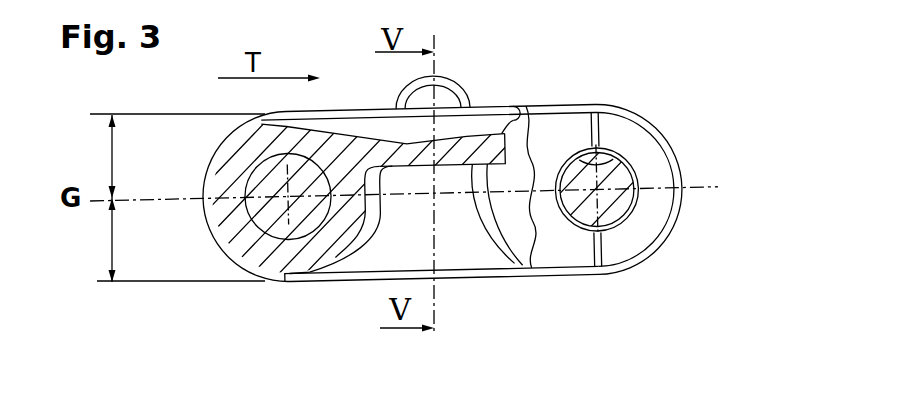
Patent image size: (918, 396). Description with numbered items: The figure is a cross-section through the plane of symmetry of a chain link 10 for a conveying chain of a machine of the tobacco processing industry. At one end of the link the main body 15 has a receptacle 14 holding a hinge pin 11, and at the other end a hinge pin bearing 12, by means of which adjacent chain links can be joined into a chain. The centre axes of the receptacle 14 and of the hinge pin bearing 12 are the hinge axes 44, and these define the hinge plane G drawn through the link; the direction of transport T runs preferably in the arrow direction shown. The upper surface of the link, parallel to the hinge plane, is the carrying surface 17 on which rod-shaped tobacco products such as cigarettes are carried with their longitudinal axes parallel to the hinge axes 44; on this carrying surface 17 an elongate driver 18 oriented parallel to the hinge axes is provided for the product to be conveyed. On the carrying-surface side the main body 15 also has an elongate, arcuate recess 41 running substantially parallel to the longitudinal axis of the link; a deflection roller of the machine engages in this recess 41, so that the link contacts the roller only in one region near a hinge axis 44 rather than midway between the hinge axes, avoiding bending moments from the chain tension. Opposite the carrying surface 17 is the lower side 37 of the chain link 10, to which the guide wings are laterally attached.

The chain link 10 is at (712, 157).
The hinge pin 11 is at (632, 215).
The hinge pin bearing 12 is at (300, 222).
The receptacle 14 is at (622, 152).
The main body 15 is at (510, 284).
The carrying surface 17 is at (534, 104).
The driver 18 is at (458, 80).
The lower side 37 is at (350, 282).
The recess 41 is at (378, 128).
The hinge axis 44 is at (262, 250).